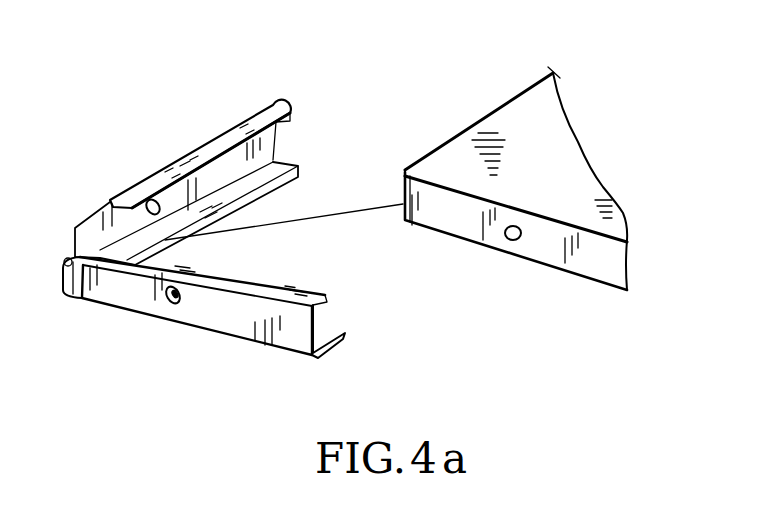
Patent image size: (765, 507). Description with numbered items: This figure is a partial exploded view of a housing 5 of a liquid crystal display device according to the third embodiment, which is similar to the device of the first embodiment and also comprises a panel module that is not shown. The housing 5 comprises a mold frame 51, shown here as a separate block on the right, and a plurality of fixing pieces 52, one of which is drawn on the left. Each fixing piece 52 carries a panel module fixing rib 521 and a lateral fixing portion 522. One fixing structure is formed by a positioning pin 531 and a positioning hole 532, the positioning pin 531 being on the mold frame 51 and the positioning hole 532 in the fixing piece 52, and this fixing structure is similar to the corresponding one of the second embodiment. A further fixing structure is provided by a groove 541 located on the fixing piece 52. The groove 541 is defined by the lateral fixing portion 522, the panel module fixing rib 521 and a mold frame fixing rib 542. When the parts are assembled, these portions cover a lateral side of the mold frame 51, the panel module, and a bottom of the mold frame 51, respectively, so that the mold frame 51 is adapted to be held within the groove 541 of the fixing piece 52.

The housing 5 is at (340, 68).
The mold frame 51 is at (516, 191).
The fixing piece 52 is at (204, 338).
The panel module fixing rib 521 is at (278, 170).
The lateral fixing portion 522 is at (285, 340).
The positioning pin 531 is at (517, 240).
The positioning hole 532 is at (168, 310).
The groove 541 is at (268, 138).
The mold frame fixing rib 542 is at (222, 138).